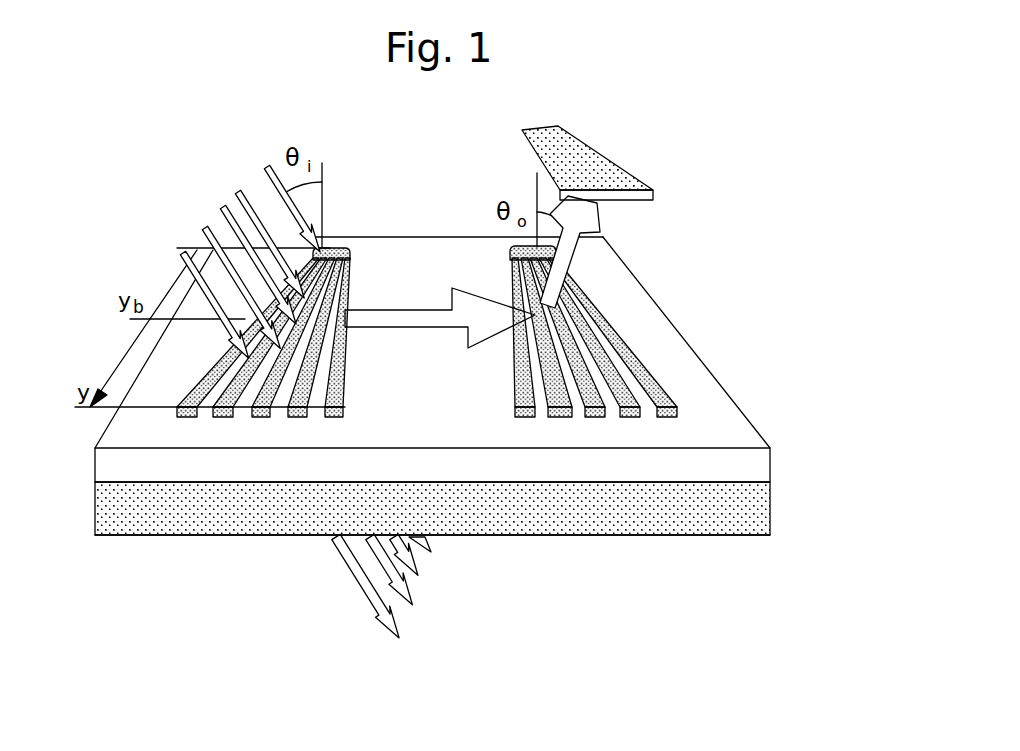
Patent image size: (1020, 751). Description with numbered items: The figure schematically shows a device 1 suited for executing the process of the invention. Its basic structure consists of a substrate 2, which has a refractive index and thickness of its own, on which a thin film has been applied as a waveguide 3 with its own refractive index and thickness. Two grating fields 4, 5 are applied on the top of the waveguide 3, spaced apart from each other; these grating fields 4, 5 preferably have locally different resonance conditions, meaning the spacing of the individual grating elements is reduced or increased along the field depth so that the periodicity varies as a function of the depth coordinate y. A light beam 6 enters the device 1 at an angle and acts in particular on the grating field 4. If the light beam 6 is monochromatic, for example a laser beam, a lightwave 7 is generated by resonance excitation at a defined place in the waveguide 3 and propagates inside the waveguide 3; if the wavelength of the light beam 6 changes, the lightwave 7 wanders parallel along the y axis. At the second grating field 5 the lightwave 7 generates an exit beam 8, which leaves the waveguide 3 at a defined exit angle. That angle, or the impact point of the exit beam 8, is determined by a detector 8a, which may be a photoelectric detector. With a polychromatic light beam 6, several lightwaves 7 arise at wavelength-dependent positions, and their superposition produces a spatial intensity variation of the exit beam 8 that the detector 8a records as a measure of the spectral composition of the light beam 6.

The device 1 is at (752, 303).
The substrate 2 is at (748, 508).
The waveguide 3 is at (747, 463).
The grating field 4 is at (299, 408).
The grating field 5 is at (592, 408).
The light beam 6 is at (203, 228).
The lightwave 7 is at (405, 310).
The exit beam 8 is at (600, 217).
The detector 8a is at (578, 157).